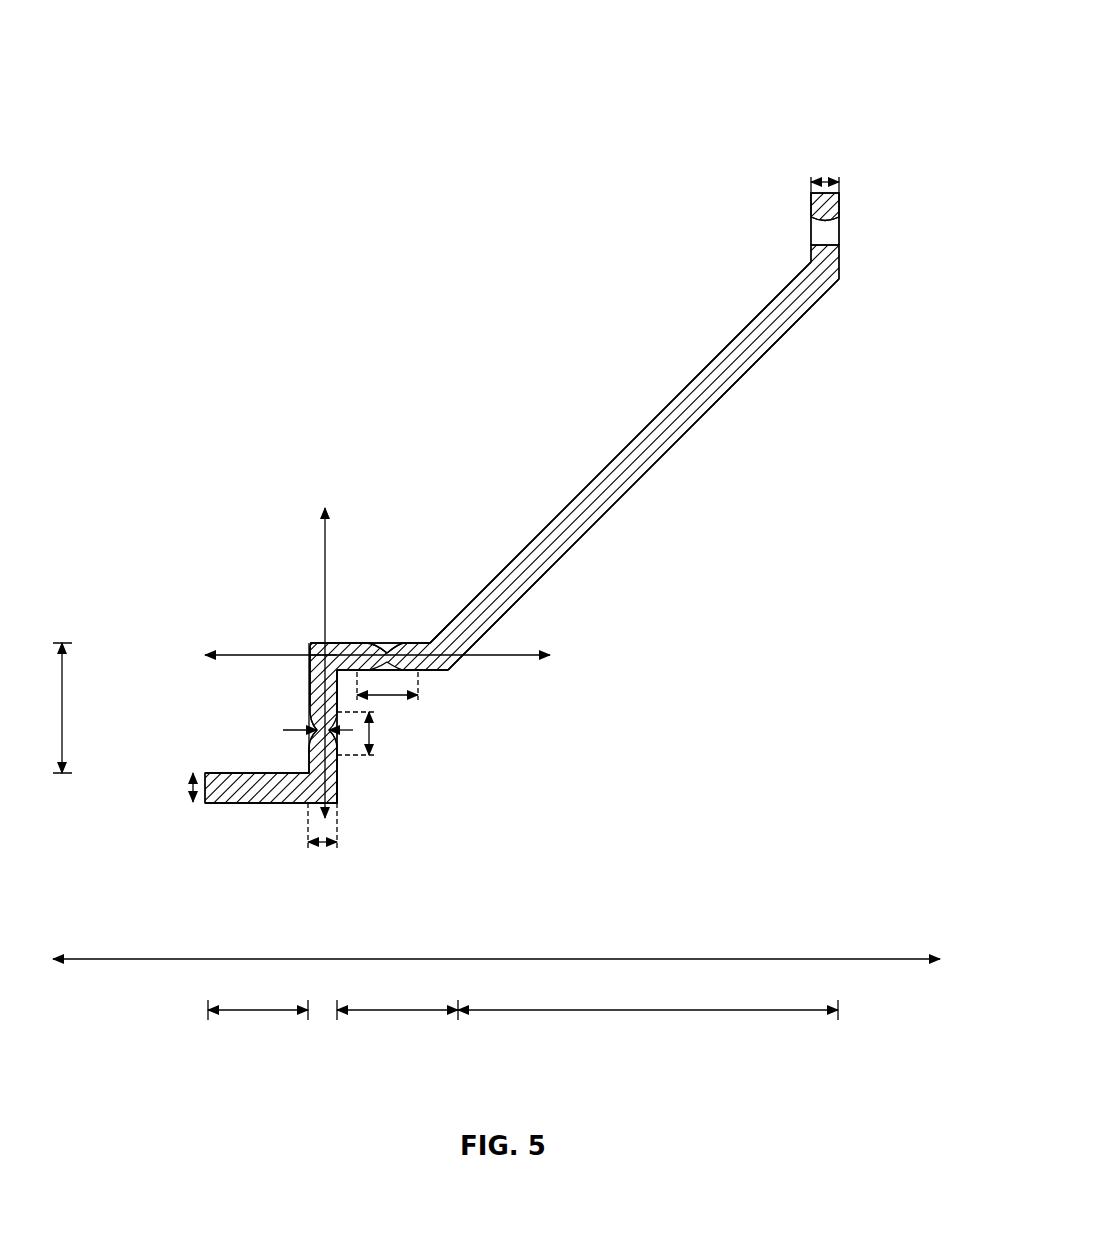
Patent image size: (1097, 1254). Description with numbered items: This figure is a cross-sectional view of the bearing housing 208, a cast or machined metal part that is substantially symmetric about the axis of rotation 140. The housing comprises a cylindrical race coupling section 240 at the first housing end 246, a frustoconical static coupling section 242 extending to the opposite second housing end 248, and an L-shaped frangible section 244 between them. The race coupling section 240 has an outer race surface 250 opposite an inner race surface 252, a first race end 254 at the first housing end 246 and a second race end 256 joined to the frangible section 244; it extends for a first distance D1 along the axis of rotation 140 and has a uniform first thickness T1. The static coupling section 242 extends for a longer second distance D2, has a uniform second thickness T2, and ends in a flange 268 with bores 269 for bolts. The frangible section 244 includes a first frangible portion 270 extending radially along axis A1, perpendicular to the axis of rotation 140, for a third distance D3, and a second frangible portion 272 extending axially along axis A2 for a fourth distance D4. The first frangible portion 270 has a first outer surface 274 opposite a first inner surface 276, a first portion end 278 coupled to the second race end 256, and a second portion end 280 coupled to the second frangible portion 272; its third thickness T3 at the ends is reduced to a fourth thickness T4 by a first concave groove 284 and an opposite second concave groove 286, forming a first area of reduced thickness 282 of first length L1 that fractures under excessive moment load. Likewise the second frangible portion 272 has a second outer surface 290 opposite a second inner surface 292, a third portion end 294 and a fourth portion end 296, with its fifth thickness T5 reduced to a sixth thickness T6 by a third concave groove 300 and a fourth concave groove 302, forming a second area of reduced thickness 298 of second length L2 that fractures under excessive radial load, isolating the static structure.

The bearing housing 208 is at (833, 62).
The static coupling section 242 is at (678, 305).
The frangible section 244 is at (412, 418).
The second frangible portion 272 is at (415, 533).
The race coupling section 240 is at (173, 712).
The second thickness T2 is at (827, 177).
The bores 269 is at (840, 217).
The flange 268 is at (810, 207).
The second housing end 248 is at (841, 247).
The second area of reduced thickness 298 is at (490, 608).
The fourth portion end 296 is at (485, 633).
The second outer surface 290 is at (432, 645).
The third concave groove 300 is at (391, 645).
The third portion end 294 is at (340, 644).
The second portion end 280 is at (310, 645).
The first outer surface 274 is at (308, 700).
The fifth thickness T5 is at (308, 672).
The first area of reduced thickness 282 is at (308, 718).
The first concave groove 284 is at (317, 731).
The fourth thickness T4 is at (353, 731).
The second inner surface 292 is at (440, 672).
The sixth thickness T6 is at (398, 672).
The first length L1 is at (373, 733).
The second length L2 is at (393, 673).
The fourth concave groove 302 is at (383, 665).
The first frangible portion 270 is at (432, 762).
The first housing end 246 is at (200, 793).
The inner race surface 252 is at (227, 773).
The outer race surface 250 is at (223, 803).
The first race end 254 is at (224, 800).
The first thickness T1 is at (188, 787).
The first inner surface 276 is at (320, 778).
The first portion end 278 is at (288, 805).
The second concave groove 286 is at (336, 800).
The second race end 256 is at (310, 818).
The third thickness T3 is at (322, 845).
The third distance D3 is at (63, 700).
The axis of rotation 140 is at (920, 960).
The first distance D1 is at (257, 1012).
The fourth distance D4 is at (407, 1012).
The second distance D2 is at (745, 1012).
The axis A1 is at (325, 540).
The axis A2 is at (515, 658).